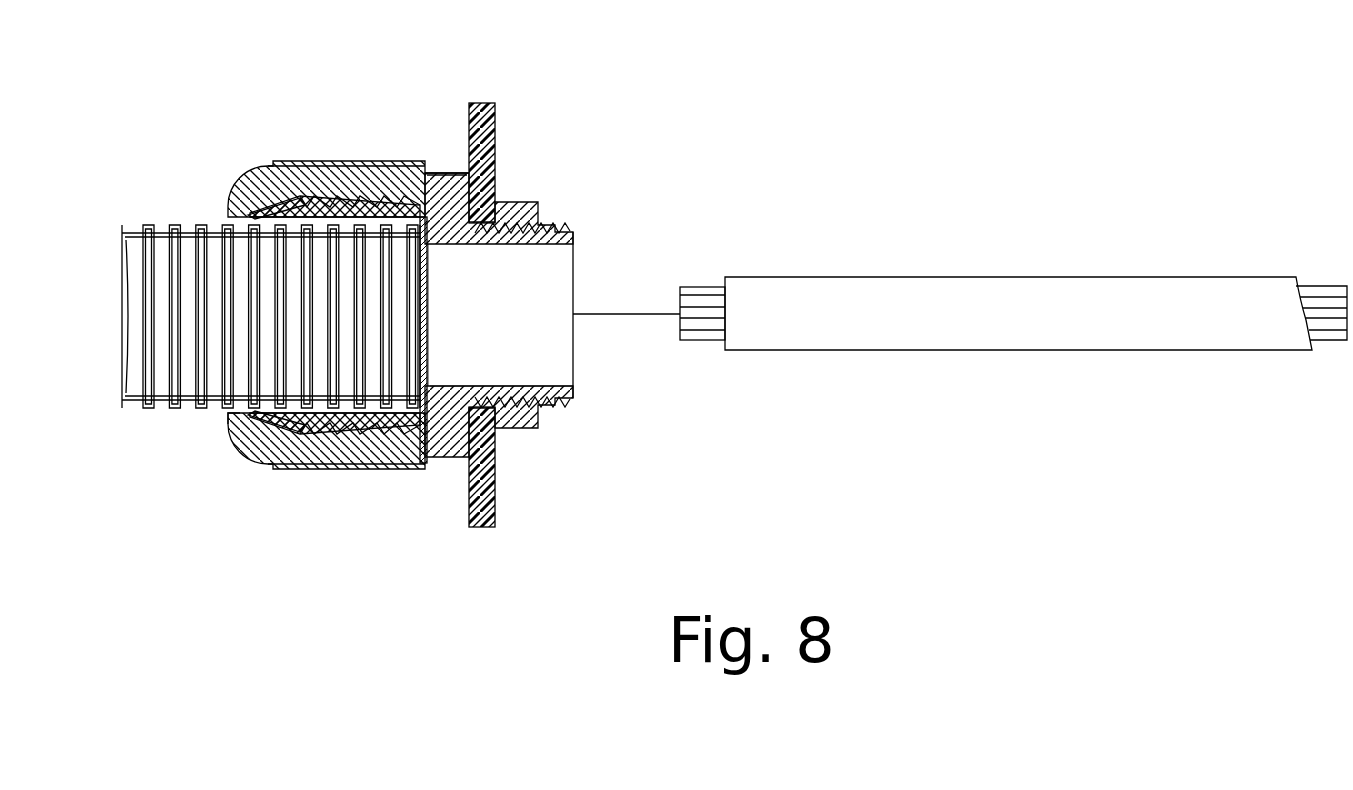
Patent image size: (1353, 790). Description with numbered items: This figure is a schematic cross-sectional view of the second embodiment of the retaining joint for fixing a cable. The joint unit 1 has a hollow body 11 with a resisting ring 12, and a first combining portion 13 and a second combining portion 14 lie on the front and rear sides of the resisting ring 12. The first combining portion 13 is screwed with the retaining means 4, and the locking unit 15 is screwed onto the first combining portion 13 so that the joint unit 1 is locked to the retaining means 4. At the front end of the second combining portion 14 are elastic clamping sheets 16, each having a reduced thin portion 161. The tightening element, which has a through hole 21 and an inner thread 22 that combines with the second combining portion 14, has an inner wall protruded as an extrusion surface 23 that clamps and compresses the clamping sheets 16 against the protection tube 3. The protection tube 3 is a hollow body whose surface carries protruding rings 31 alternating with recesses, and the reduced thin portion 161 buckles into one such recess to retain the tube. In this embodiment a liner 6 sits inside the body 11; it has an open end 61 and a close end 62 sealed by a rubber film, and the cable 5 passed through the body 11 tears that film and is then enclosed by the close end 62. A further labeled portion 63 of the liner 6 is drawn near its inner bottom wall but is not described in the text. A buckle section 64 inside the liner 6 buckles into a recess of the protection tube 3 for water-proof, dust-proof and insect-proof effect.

The joint unit 1 is at (540, 145).
The hollow body 11 is at (443, 137).
The resisting ring 12 is at (449, 173).
The first combining portion 13 is at (557, 222).
The second combining portion 14 is at (410, 435).
The locking unit 15 is at (525, 430).
The elastic clamping sheets 16 is at (322, 145).
The reduced thin portion 161 is at (262, 213).
The through hole 21 is at (365, 433).
The thread 22 is at (230, 411).
The extrusion surface 23 is at (247, 447).
The protection tube 3 is at (145, 213).
The protruding rings 31 is at (170, 226).
The retaining means 4 is at (490, 140).
The cable 5 is at (960, 278).
The liner 6 is at (445, 322).
The open end 61 is at (343, 400).
The close end 62 is at (430, 293).
The inner bottom wall 63 is at (430, 373).
The buckle section 64 is at (303, 210).